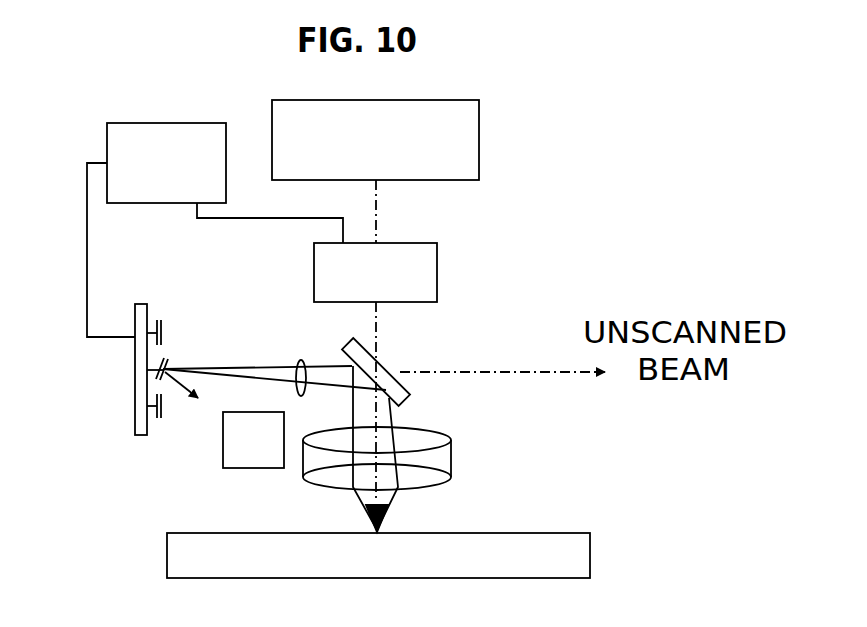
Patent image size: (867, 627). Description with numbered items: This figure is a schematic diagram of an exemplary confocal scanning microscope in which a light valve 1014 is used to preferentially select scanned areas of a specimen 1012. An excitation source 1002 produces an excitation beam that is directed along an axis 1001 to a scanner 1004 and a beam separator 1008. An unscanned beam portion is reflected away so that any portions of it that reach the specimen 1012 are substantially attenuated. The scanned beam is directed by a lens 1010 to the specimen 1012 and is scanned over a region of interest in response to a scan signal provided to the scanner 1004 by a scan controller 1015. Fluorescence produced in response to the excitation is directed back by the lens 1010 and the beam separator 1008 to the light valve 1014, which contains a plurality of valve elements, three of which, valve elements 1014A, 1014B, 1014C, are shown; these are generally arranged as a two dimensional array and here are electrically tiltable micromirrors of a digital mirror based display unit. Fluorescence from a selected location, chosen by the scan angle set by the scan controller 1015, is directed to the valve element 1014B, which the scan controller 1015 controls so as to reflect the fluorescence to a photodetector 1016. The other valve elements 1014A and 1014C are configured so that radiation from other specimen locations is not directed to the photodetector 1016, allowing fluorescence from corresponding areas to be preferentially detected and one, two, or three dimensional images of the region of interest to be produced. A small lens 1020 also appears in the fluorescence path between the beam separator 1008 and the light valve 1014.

The axis 1001 is at (378, 209).
The excitation source 1002 is at (479, 137).
The scanner 1004 is at (437, 257).
The beam separator 1008 is at (406, 350).
The lens 1010 is at (451, 443).
The specimen 1012 is at (165, 563).
The light valve 1014 is at (144, 364).
The valve element 1014A is at (163, 333).
The valve element 1014B is at (168, 368).
The valve element 1014C is at (157, 420).
The scan controller 1015 is at (135, 123).
The photodetector 1016 is at (238, 468).
The lens 1020 is at (301, 360).